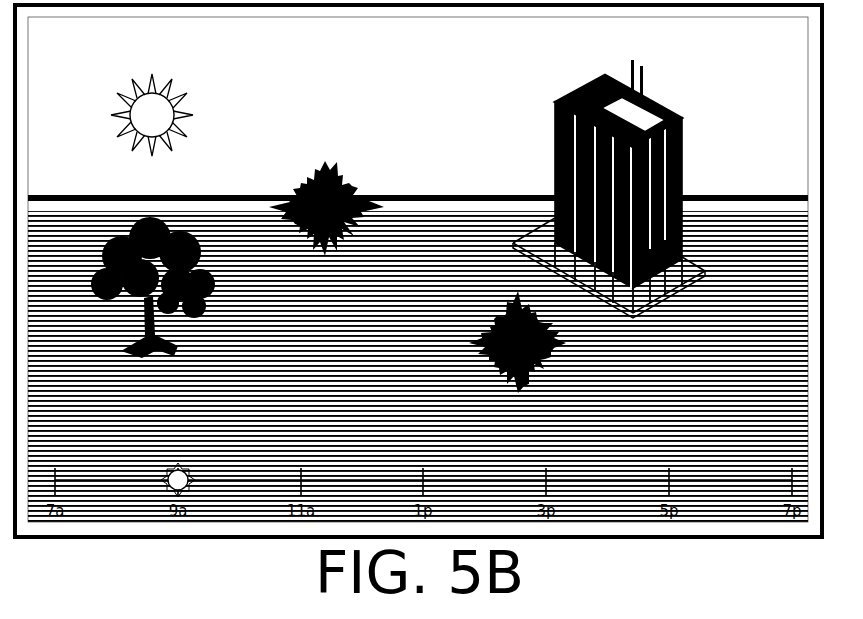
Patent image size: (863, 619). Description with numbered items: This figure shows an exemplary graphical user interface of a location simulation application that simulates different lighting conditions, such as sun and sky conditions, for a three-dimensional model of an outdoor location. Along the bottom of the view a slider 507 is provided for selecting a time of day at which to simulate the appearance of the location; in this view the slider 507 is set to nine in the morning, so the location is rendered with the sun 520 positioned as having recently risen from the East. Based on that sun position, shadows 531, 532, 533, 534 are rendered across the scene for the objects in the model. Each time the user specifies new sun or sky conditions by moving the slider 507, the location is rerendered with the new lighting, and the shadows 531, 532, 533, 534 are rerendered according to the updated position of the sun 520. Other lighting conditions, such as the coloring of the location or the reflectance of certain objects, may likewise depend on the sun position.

The slider 507 is at (181, 466).
The sun 520 is at (138, 111).
The shadow 531 is at (205, 408).
The shadow 532 is at (358, 284).
The shadow 533 is at (545, 424).
The shadow 534 is at (684, 361).